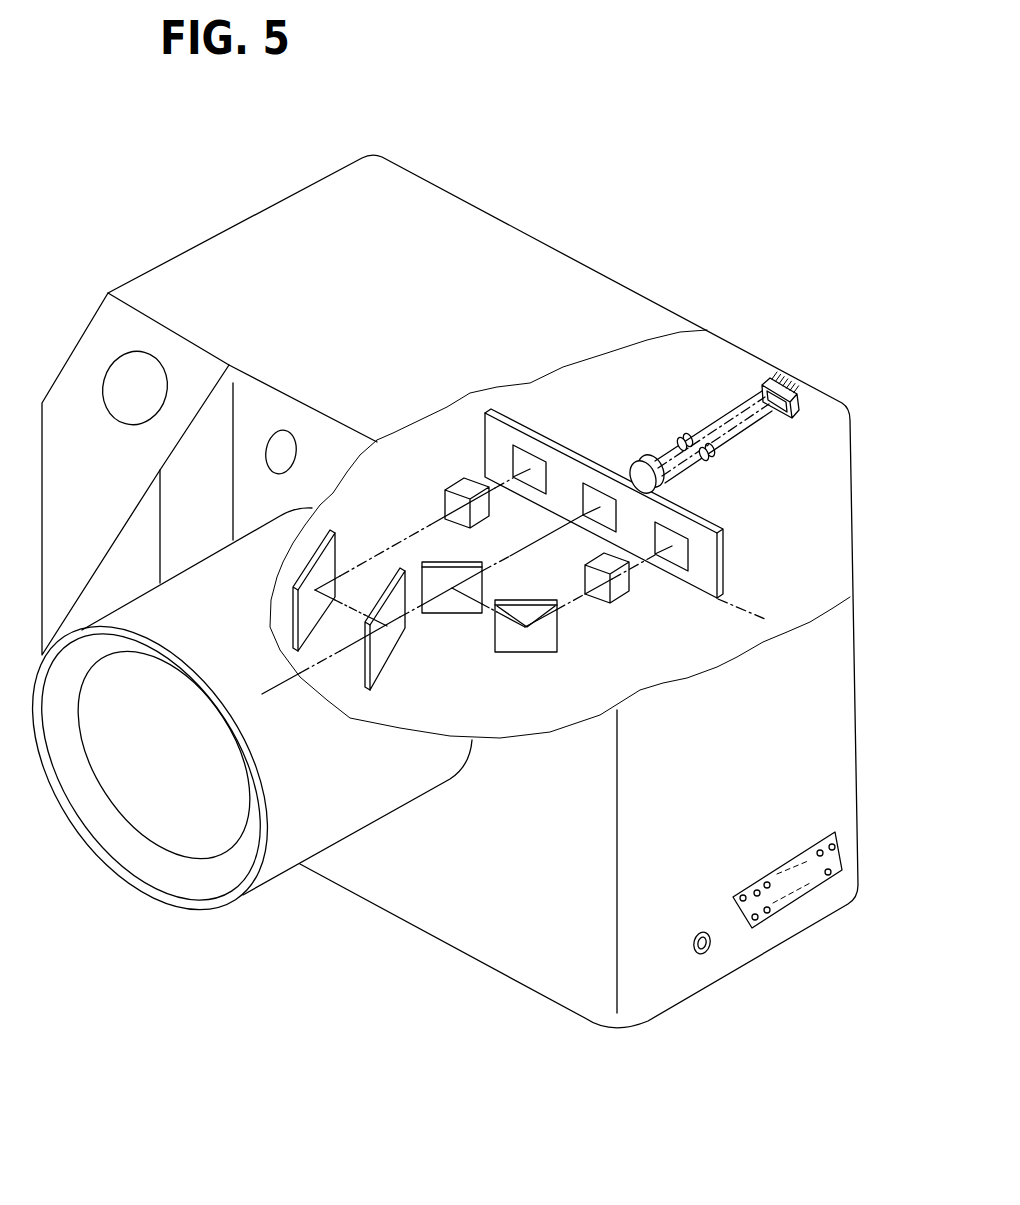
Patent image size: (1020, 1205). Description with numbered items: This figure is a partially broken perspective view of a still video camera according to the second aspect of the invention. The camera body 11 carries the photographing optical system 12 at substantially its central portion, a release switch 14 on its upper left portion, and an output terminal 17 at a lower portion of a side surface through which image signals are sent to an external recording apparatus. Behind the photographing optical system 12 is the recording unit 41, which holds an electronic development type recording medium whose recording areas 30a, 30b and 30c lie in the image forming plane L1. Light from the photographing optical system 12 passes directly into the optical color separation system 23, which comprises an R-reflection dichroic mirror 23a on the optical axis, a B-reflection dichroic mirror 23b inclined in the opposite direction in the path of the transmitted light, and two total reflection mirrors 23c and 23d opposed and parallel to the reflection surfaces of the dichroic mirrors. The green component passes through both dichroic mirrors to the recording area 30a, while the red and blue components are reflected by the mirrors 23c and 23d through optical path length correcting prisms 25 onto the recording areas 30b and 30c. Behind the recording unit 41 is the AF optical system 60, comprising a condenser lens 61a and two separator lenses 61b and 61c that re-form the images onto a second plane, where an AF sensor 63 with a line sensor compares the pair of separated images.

The camera body 11 is at (453, 948).
The photographing optical system 12 is at (183, 845).
The release switch 14 is at (118, 377).
The output terminal 17 is at (818, 879).
The optical color separation system 23 is at (475, 662).
The R-reflection dichroic mirror 23a is at (388, 645).
The B-reflection dichroic mirror 23b is at (440, 568).
The total reflection mirror 23c is at (334, 544).
The total reflection mirror 23d is at (557, 633).
The optical path length correcting prism 25 is at (462, 492).
The recording area 30a is at (598, 490).
The recording area 30b is at (528, 443).
The recording area 30c is at (698, 530).
The recording unit 41 is at (723, 565).
The image forming plane L1 is at (730, 607).
The AF optical system 60 is at (722, 398).
The condenser lens 61a is at (645, 457).
The separator lens 61b is at (687, 434).
The separator lens 61c is at (715, 460).
The AF sensor 63 is at (797, 418).